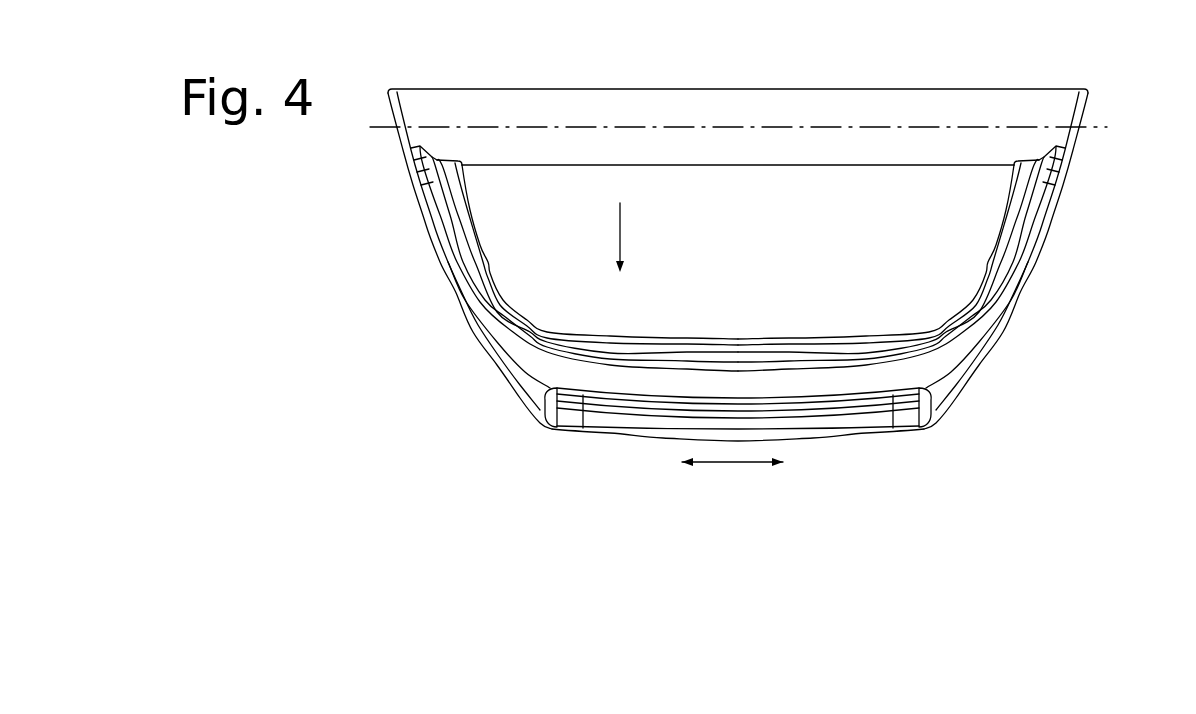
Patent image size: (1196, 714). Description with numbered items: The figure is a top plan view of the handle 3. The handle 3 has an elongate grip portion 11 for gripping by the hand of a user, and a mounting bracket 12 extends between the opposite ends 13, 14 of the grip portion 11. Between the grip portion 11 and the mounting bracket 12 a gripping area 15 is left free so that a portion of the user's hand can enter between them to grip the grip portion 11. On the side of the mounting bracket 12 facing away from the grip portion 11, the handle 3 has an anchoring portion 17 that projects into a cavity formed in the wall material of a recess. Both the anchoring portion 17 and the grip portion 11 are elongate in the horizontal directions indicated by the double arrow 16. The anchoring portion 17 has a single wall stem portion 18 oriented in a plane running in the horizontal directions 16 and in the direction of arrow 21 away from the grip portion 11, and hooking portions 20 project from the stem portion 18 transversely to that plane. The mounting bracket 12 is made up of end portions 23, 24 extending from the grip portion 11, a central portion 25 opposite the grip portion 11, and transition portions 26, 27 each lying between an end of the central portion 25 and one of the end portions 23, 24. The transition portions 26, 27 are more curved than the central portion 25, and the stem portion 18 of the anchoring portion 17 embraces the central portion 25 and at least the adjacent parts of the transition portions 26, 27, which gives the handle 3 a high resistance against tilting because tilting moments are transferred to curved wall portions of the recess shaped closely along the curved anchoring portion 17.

The handle 3 is at (1075, 233).
The grip portion 11 is at (704, 86).
The mounting bracket 12 is at (794, 340).
The end of the grip portion 13 is at (422, 110).
The end of the grip portion 14 is at (1055, 112).
The gripping area 15 is at (780, 222).
The horizontal directions 16 is at (742, 465).
The anchoring portion 17 is at (973, 383).
The stem portion 18 is at (578, 382).
The hooking portions 20 is at (835, 418).
The direction away from the grip portion 21 is at (620, 227).
The end portion 23 is at (442, 226).
The end portion 24 is at (1043, 203).
The central portion 25 is at (718, 340).
The transition portion 26 is at (495, 321).
The transition portion 27 is at (983, 320).